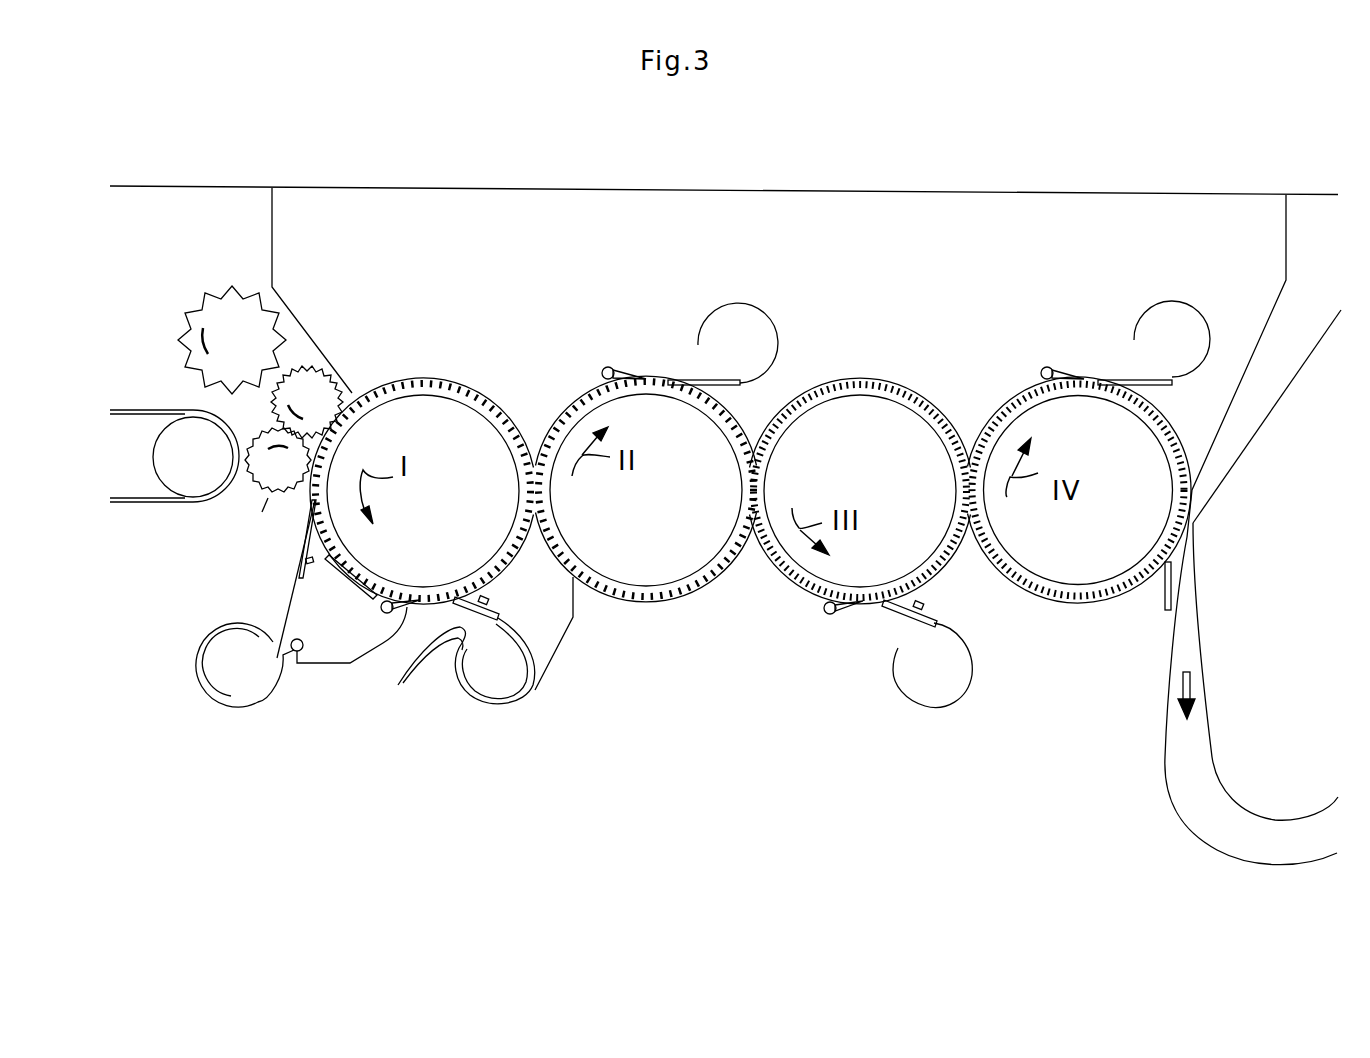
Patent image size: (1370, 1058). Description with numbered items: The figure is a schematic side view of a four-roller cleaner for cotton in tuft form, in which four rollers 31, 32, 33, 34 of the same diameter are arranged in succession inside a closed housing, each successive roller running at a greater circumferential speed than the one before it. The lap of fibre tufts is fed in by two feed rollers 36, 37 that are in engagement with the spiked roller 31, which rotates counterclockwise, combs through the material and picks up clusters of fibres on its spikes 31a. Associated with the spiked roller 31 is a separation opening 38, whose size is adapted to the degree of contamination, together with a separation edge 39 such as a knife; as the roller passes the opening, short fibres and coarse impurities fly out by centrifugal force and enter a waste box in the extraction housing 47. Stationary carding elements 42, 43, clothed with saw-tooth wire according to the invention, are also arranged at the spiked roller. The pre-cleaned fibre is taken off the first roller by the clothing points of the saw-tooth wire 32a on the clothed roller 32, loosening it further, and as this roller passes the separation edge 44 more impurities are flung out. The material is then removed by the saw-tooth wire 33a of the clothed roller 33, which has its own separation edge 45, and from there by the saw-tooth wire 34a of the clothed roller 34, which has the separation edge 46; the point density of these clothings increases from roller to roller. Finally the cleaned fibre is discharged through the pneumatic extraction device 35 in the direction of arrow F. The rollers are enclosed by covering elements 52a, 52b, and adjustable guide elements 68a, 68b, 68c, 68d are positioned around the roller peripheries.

The spiked roller 31 is at (430, 430).
The spikes 31a is at (433, 383).
The clothed roller 32 is at (667, 567).
The saw-tooth wire 32a is at (627, 590).
The clothed roller 33 is at (875, 432).
The saw-tooth wire 33a is at (850, 390).
The clothed roller 34 is at (1095, 570).
The saw-tooth wire 34a is at (1030, 578).
The pneumatic extraction device 35 is at (1249, 416).
The feed roller 36 is at (257, 497).
The feed roller 37 is at (313, 388).
The separation opening 38 is at (272, 505).
The separation edge 39 is at (302, 533).
The stationary carding element 42 is at (330, 568).
The stationary carding element 43 is at (360, 590).
The separation edge 44 is at (700, 380).
The separation edge 45 is at (889, 615).
The separation edge 46 is at (1133, 380).
The extraction housing 47 is at (233, 667).
The covering element 52a is at (413, 373).
The covering element 52b is at (1133, 585).
The adjustable guide element 68a is at (400, 637).
The adjustable guide element 68b is at (623, 367).
The adjustable guide element 68c is at (840, 612).
The adjustable guide element 68d is at (1053, 369).
The arrow F is at (1190, 710).